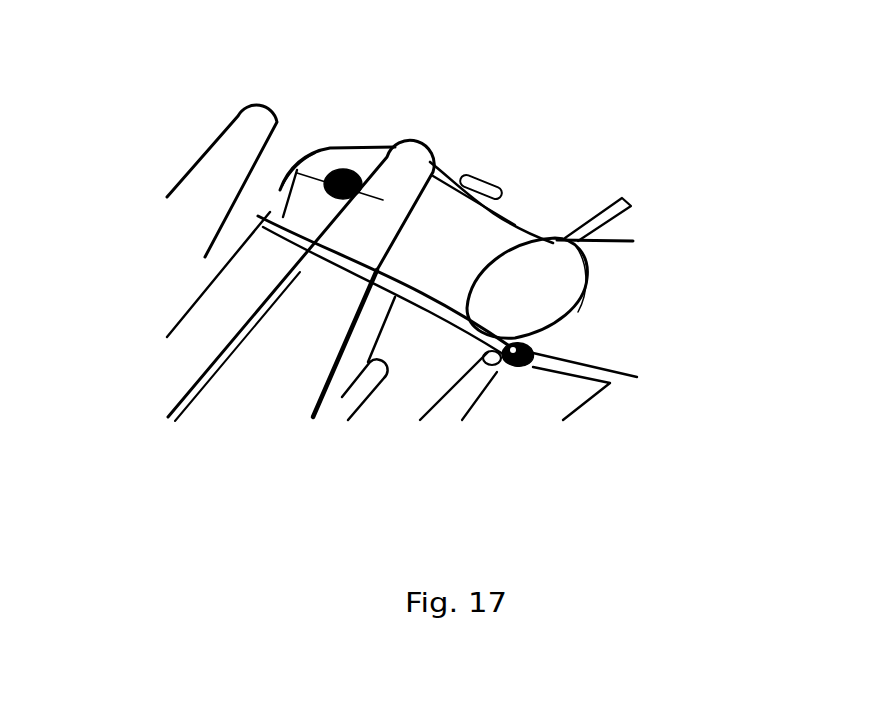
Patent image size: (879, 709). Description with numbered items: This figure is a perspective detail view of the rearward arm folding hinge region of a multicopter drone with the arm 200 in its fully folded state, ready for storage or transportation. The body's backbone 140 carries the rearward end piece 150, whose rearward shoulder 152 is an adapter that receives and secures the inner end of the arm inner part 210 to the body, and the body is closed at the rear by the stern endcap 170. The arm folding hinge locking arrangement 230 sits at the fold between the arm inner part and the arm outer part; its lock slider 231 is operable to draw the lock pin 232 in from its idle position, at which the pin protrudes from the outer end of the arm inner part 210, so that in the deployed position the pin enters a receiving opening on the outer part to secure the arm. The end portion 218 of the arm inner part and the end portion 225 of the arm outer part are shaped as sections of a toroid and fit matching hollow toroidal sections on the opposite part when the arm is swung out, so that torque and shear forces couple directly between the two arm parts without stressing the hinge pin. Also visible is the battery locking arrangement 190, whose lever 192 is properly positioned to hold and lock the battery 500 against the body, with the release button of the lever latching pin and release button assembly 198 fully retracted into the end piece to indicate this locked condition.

The backbone 140 is at (617, 398).
The rearward end piece 150 is at (618, 323).
The rearward shoulder 152 is at (548, 283).
The stern endcap 170 is at (617, 220).
The battery locking arrangement 190 is at (490, 367).
The lever 192 is at (513, 367).
The lever latching pin and release button assembly 198 is at (527, 357).
The arm 200 is at (187, 390).
The arm inner part 210 is at (447, 207).
The end portion of the arm inner part 218 is at (270, 208).
The end portion of the arm outer part 225 is at (497, 172).
The arm folding hinge locking arrangement 230 is at (387, 160).
The lock slider 231 is at (348, 175).
The lock pin 232 is at (298, 168).
The battery 500 is at (470, 398).